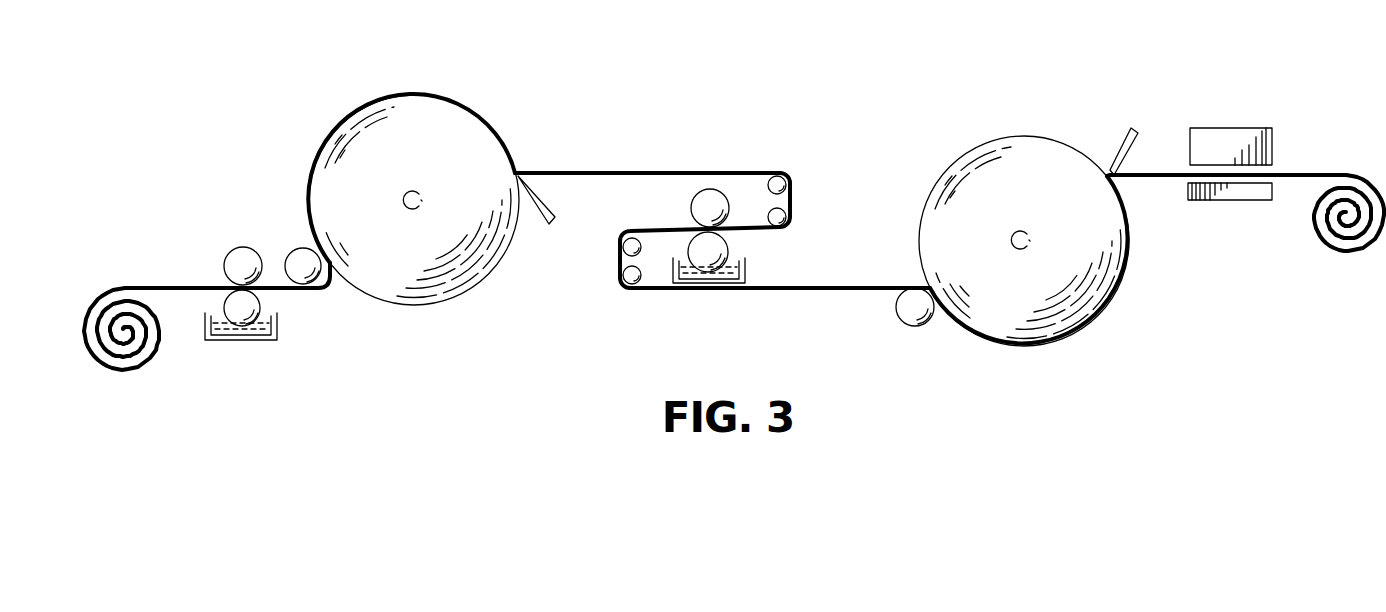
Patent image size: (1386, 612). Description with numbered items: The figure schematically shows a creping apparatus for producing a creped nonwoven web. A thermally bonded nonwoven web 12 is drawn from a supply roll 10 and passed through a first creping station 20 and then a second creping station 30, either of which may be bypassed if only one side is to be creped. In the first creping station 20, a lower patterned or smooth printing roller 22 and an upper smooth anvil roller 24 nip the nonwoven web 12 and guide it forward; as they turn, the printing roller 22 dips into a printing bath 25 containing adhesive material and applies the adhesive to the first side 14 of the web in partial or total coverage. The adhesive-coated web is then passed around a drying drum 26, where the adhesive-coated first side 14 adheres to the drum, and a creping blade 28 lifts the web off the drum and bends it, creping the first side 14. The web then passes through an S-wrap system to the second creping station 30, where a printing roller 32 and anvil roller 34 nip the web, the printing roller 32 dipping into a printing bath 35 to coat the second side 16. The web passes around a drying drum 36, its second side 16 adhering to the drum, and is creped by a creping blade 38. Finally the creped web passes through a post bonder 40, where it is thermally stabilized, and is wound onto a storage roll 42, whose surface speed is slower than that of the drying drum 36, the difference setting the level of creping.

The supply roll of web 10 is at (137, 369).
The nonwoven web 12 is at (183, 285).
The first side 14 is at (197, 291).
The second side 16 is at (664, 172).
The first creping station 20 is at (356, 99).
The printing roller 22 is at (260, 305).
The anvil roller 24 is at (243, 247).
The printing bath 25 is at (262, 338).
The drying drum 26 is at (450, 304).
The creping blade 28 is at (542, 216).
The second creping station 30 is at (972, 131).
The printing roller 32 is at (728, 246).
The anvil roller 34 is at (690, 205).
The printing bath 35 is at (743, 266).
The drying drum 36 is at (1027, 135).
The creping blade 38 is at (1118, 137).
The post bonder 40 is at (1238, 132).
The storage roll 42 is at (1352, 249).